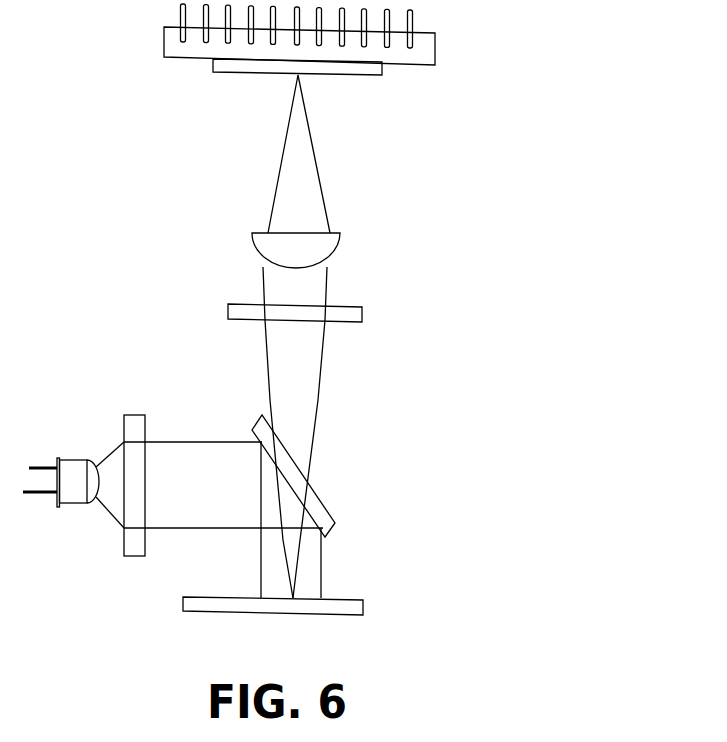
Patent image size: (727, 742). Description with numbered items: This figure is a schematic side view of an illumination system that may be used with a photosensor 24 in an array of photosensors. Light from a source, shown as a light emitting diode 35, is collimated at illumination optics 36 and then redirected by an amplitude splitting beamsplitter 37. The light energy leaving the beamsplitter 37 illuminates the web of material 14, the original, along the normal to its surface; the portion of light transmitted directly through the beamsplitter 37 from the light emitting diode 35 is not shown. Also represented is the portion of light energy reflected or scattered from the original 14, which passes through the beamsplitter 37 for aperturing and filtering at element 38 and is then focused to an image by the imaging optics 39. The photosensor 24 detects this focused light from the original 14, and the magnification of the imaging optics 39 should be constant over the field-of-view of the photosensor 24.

The photosensor 24 is at (170, 50).
The imaging optics 39 is at (332, 228).
The aperturing and filtering element 38 is at (350, 311).
The amplitude splitting beamsplitter 37 is at (315, 505).
The illumination optics 36 is at (135, 427).
The light emitting diode 35 is at (77, 477).
The web of material 14 is at (347, 608).